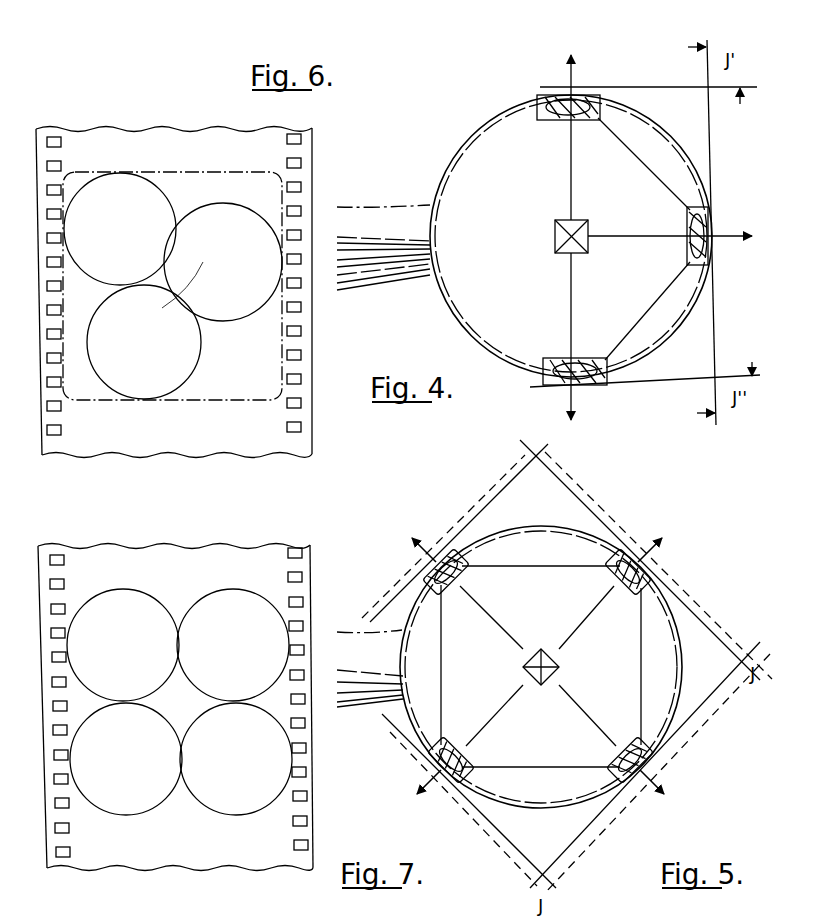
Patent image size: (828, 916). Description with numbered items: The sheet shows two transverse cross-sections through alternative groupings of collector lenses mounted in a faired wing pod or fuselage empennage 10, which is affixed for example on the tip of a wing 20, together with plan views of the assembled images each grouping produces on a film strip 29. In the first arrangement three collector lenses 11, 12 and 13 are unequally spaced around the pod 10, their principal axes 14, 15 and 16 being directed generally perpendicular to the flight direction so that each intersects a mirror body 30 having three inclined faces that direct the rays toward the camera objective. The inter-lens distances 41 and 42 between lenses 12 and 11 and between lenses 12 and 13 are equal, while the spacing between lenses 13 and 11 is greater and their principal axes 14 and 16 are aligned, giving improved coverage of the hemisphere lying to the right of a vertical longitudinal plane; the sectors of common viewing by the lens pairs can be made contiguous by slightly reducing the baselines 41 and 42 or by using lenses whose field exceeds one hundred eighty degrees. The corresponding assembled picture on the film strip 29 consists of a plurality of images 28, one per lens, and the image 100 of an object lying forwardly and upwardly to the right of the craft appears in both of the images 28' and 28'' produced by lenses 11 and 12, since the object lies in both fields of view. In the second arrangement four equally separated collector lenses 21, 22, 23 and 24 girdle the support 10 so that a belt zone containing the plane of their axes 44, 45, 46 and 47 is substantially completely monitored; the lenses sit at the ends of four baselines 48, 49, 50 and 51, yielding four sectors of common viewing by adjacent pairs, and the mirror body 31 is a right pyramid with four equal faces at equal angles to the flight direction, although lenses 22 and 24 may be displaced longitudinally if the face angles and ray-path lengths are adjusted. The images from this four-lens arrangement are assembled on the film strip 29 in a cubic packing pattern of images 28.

In FIG. 4, the wing pod 10 is at (482, 128).
In FIG. 5, the wing pod 10 is at (533, 526).
In FIG. 4, the collector lens 11 is at (538, 112).
In FIG. 4, the collector lens 12 is at (688, 212).
In FIG. 4, the collector lens 13 is at (556, 360).
In FIG. 4, the principal axis 14 is at (570, 175).
In FIG. 4, the principal axis 15 is at (640, 238).
In FIG. 4, the principal axis 16 is at (572, 308).
In FIG. 4, the wing 20 is at (338, 207).
In FIG. 5, the collector lens 21 is at (465, 580).
In FIG. 5, the collector lens 22 is at (608, 578).
In FIG. 5, the collector lens 23 is at (630, 746).
In FIG. 5, the collector lens 24 is at (456, 746).
In FIG. 6, the image 28 is at (144, 381).
In FIG. 7, the image 28 is at (179, 669).
In FIG. 6, the image 28' is at (120, 194).
In FIG. 6, the image 28'' is at (223, 209).
In FIG. 6, the film strip 29 is at (220, 445).
In FIG. 7, the film strip 29 is at (258, 856).
In FIG. 4, the mirror body 30 is at (555, 240).
In FIG. 5, the mirror body 31 is at (524, 666).
In FIG. 4, the inter-lens distance 41 is at (640, 160).
In FIG. 4, the inter-lens distance 42 is at (626, 332).
In FIG. 5, the axis 44 is at (506, 635).
In FIG. 5, the axis 45 is at (573, 642).
In FIG. 5, the axis 46 is at (584, 710).
In FIG. 5, the axis 47 is at (497, 732).
In FIG. 5, the baseline 48 is at (540, 566).
In FIG. 5, the baseline 49 is at (641, 660).
In FIG. 5, the baseline 50 is at (540, 767).
In FIG. 5, the baseline 51 is at (441, 676).
In FIG. 6, the image of an object 100 is at (148, 262).